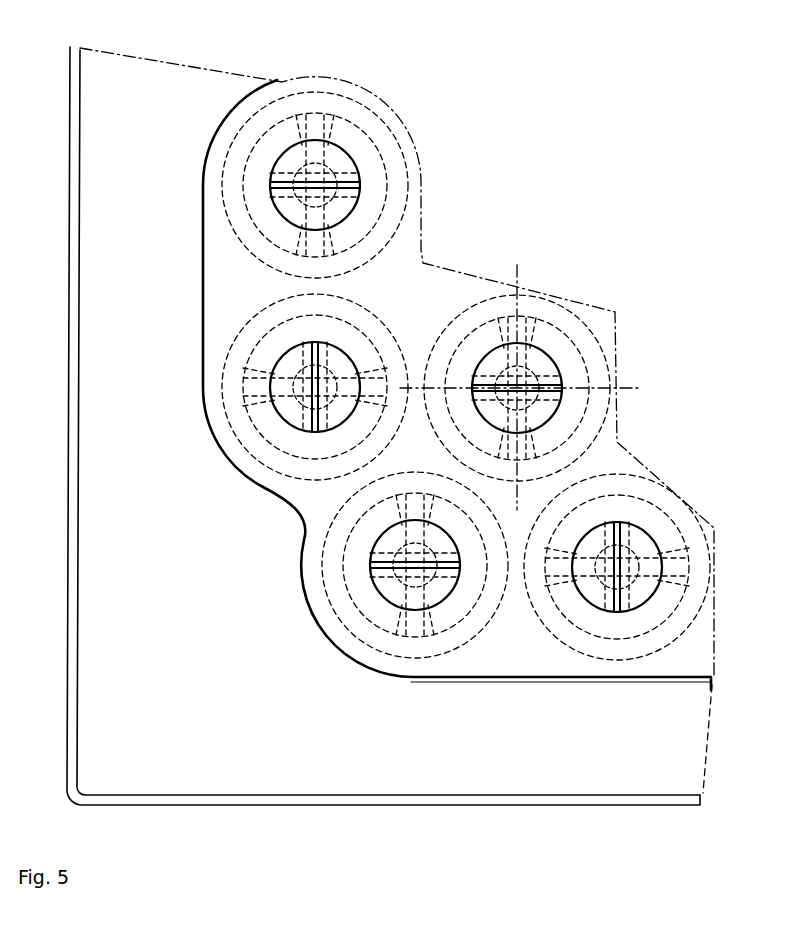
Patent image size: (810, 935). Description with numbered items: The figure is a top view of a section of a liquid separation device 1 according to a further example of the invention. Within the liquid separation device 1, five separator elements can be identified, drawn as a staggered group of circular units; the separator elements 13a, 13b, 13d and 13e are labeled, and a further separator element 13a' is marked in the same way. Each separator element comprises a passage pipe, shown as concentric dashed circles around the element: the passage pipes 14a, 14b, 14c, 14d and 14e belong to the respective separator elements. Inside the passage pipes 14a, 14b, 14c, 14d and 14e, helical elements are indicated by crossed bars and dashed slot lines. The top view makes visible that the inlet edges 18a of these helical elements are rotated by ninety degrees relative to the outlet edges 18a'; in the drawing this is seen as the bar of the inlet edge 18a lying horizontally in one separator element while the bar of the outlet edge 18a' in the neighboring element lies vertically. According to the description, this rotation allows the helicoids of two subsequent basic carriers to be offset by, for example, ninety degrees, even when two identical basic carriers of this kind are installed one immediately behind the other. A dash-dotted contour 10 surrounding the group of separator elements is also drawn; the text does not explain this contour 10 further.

The liquid separation device 1 is at (703, 652).
The outline of fastening region 10 is at (413, 253).
The separator element 13a is at (375, 181).
The mounting opening 13a' is at (579, 388).
The separator element 13b is at (365, 352).
The separator element 13d is at (385, 622).
The separator element 13e is at (637, 623).
The passage pipe 14a is at (375, 122).
The passage pipe 14b is at (363, 317).
The passage pipe 14c is at (560, 313).
The passage pipe 14d is at (347, 615).
The passage pipe 14e is at (580, 642).
The inlet edge 18a is at (438, 647).
The outlet edge 18a' is at (679, 525).